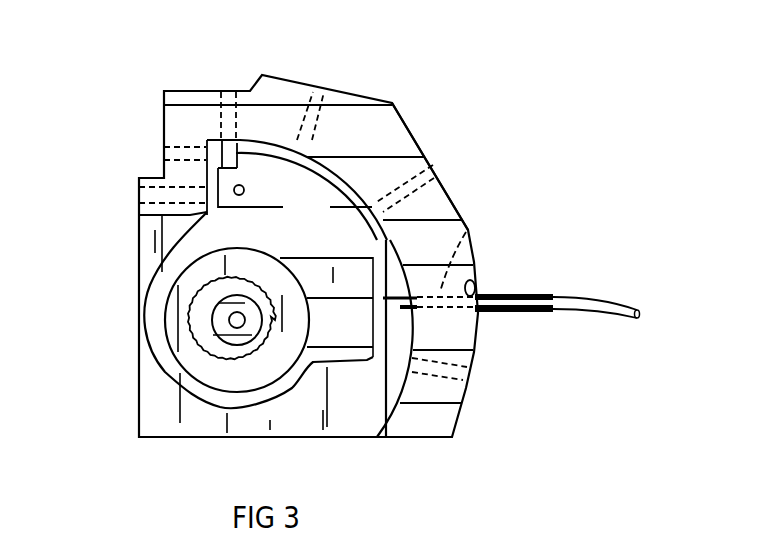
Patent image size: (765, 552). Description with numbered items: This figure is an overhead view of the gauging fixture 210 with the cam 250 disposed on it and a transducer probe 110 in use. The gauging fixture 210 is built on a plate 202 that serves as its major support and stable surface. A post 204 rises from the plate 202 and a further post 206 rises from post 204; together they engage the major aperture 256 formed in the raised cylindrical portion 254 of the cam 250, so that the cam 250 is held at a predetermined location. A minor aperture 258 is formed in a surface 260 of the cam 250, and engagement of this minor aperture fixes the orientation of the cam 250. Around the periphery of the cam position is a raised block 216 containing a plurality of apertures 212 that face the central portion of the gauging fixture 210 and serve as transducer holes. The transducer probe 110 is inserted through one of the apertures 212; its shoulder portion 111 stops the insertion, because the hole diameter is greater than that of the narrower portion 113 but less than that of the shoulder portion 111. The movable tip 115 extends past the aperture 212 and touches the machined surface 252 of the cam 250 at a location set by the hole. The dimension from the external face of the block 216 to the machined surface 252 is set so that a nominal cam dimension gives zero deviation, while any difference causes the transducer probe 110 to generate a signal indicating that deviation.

The transducer probe 110 is at (520, 302).
The shoulder portion 111 is at (472, 292).
The narrower portion 113 is at (473, 226).
The movable tip 115 is at (390, 303).
The plate 202 is at (162, 424).
The post 204 is at (257, 331).
The post 206 is at (238, 320).
The gauging fixture 210 is at (462, 92).
The apertures 212 is at (227, 98).
The raised block 216 is at (383, 127).
The cam 250 is at (157, 307).
The machined surface 252 is at (352, 204).
The raised cylindrical portion 254 is at (273, 278).
The major aperture 256 is at (258, 357).
The minor aperture 258 is at (257, 176).
The surface 260 is at (261, 226).